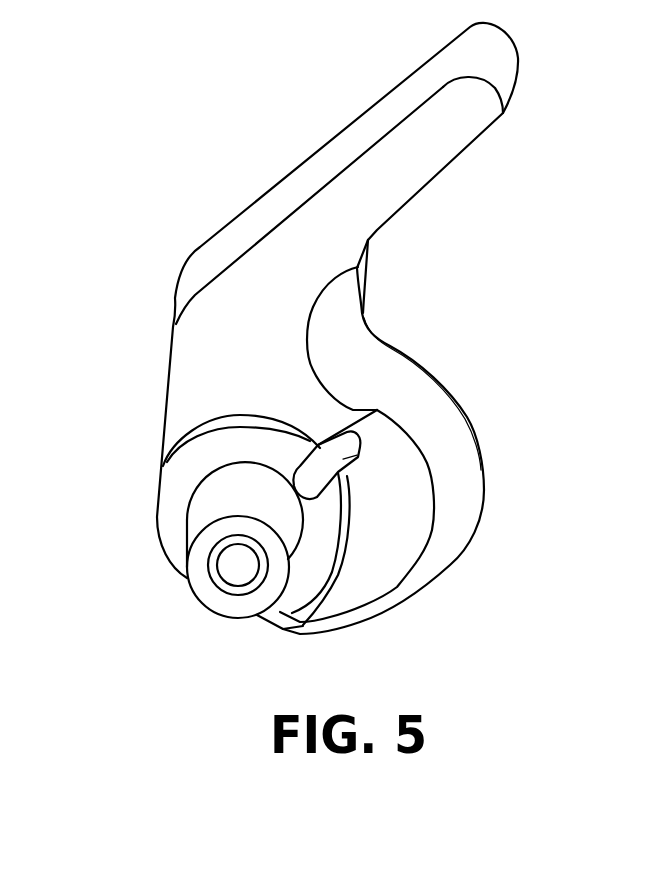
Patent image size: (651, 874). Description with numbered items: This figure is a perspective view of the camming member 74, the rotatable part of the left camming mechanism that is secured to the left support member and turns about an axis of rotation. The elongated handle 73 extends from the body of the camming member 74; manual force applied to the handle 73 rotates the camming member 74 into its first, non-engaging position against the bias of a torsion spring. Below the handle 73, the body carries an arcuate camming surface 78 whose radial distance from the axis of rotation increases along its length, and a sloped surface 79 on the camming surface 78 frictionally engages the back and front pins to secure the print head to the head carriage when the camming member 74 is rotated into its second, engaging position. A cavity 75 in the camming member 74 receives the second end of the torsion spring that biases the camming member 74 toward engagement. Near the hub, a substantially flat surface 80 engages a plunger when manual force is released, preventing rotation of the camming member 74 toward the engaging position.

The handle 73 is at (383, 150).
The camming member 74 is at (148, 425).
The cavity 75 is at (342, 460).
The arcuate camming surface 78 is at (485, 478).
The sloped surface 79 is at (435, 555).
The substantially flat surface 80 is at (275, 618).